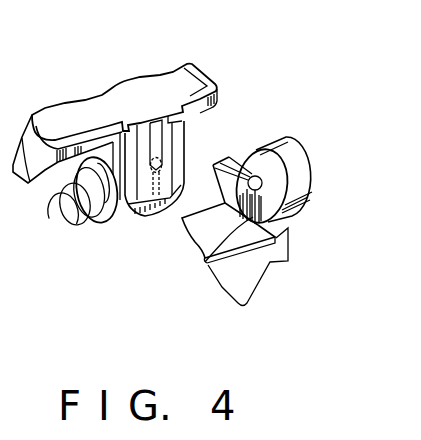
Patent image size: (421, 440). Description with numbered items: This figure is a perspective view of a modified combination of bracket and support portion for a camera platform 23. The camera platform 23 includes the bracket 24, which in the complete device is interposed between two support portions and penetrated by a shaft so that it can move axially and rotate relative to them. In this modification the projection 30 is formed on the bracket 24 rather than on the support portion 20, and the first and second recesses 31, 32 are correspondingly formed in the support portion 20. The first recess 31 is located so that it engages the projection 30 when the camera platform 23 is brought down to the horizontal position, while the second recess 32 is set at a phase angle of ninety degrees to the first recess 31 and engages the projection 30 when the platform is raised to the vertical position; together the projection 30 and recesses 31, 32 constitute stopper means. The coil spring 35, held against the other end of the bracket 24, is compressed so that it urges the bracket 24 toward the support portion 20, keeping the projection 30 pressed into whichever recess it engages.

The support portion 20 is at (300, 157).
The camera platform 23 is at (203, 70).
The bracket 24 is at (124, 228).
The projection 30 is at (158, 203).
The first recess 31 is at (208, 260).
The second recess 32 is at (230, 168).
The coil spring 35 is at (67, 228).